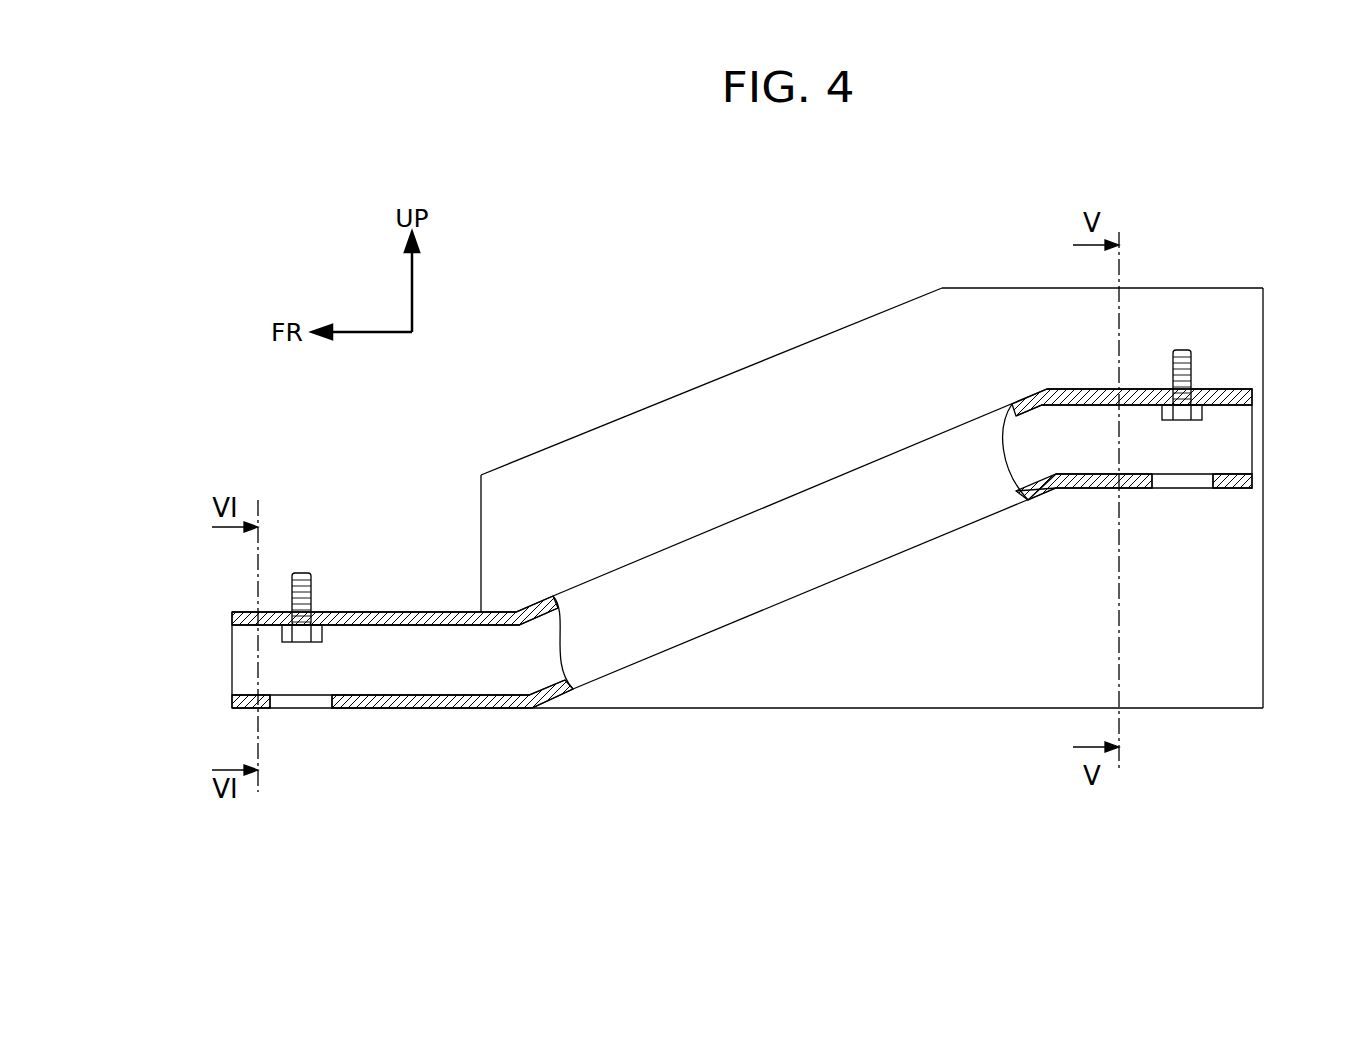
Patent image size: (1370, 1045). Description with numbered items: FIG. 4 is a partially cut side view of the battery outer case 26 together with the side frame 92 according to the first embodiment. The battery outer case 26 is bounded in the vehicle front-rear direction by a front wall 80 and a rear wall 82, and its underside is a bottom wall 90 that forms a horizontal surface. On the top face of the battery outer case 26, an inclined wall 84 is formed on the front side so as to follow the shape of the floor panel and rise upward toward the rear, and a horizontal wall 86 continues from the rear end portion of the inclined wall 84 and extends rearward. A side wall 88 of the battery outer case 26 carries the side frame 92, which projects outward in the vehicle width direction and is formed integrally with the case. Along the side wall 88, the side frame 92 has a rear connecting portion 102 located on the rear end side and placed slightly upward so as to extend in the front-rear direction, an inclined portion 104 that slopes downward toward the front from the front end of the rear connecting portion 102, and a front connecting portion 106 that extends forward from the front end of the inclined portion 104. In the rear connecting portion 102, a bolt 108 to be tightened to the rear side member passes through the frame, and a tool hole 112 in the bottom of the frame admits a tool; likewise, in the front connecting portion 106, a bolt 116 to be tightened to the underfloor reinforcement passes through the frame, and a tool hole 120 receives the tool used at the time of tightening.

The battery outer case 26 is at (786, 497).
The front wall 80 is at (481, 495).
The rear wall 82 is at (1263, 568).
The inclined wall 84 is at (730, 372).
The horizontal wall 86 is at (1177, 288).
The side wall 88 is at (883, 343).
The bottom wall 90 is at (915, 708).
The side frame 92 is at (750, 560).
The rear connecting portion 102 is at (1175, 448).
The inclined portion 104 is at (703, 532).
The front connecting portion 106 is at (363, 672).
The bolt 108 is at (1187, 420).
The tool hole 112 is at (1182, 484).
The bolt 116 is at (278, 632).
The tool hole 120 is at (302, 706).